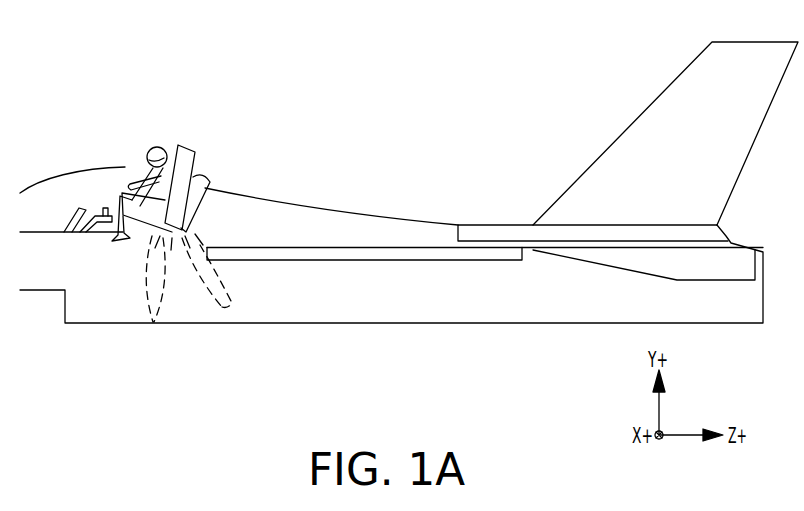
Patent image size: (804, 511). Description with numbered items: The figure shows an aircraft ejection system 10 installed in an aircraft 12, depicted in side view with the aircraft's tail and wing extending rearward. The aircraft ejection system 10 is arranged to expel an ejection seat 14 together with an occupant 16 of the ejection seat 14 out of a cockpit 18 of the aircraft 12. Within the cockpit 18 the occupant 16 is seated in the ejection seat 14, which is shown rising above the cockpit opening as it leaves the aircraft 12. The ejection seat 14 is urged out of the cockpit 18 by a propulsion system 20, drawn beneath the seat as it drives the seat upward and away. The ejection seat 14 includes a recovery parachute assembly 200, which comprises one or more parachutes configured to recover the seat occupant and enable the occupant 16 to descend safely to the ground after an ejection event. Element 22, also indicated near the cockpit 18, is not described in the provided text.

The aircraft ejection system 10 is at (409, 182).
The aircraft 12 is at (426, 298).
The ejection seat 14 is at (203, 181).
The occupant 16 is at (147, 152).
The cockpit 18 is at (54, 214).
The propulsion system 20 is at (150, 278).
The canopy 22 is at (75, 173).
The recovery parachute assembly 200 is at (175, 216).